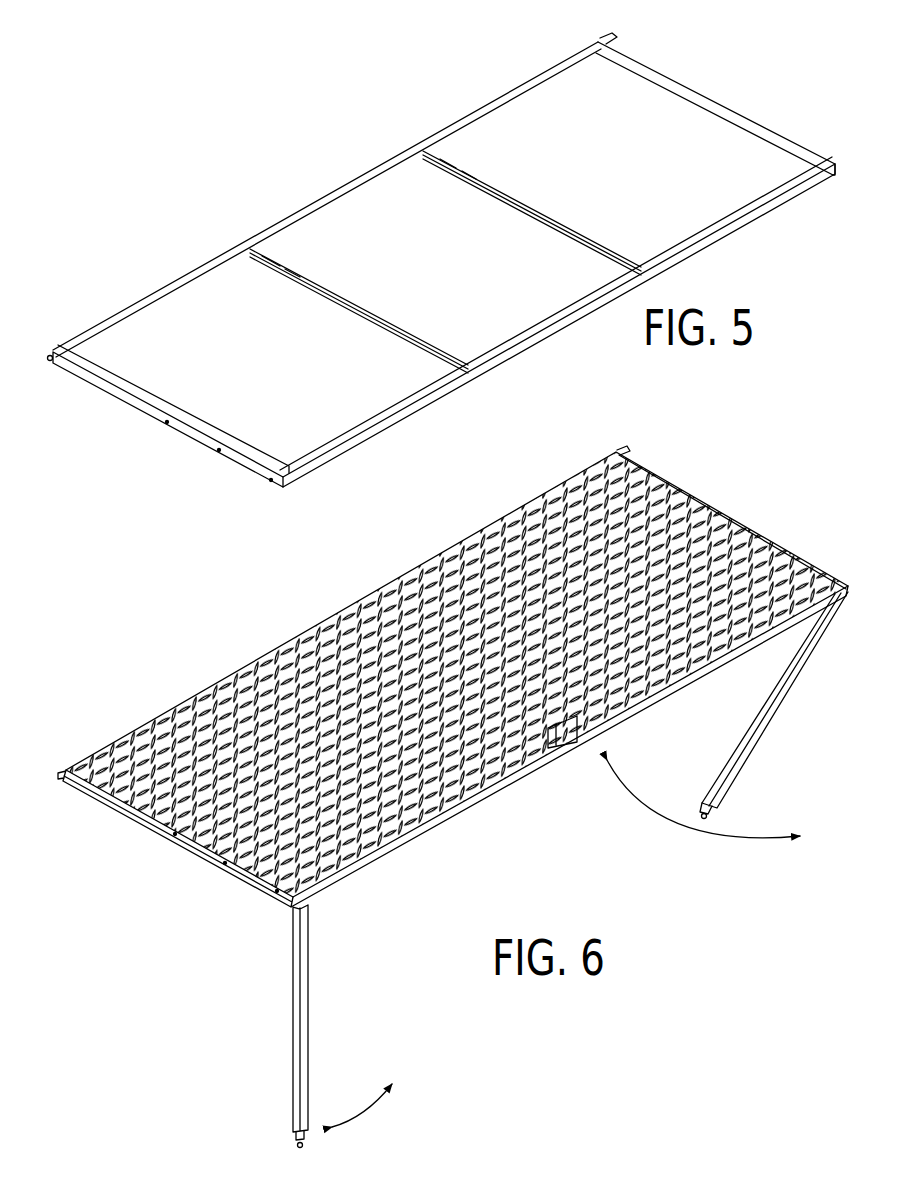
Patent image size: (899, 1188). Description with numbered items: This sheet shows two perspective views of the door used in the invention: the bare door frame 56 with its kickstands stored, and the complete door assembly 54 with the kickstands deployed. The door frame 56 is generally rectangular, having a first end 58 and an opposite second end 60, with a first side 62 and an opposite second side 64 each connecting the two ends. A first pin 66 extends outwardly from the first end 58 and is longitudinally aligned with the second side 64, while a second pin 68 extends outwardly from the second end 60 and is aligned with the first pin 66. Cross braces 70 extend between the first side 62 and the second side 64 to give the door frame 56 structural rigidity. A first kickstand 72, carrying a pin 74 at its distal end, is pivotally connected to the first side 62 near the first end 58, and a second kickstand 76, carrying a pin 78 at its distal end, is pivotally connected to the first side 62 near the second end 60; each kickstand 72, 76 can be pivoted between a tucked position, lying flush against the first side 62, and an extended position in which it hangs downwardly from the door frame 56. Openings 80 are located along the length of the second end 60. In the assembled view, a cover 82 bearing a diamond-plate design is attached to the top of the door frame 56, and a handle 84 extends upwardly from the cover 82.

In FIG. 6, the door assembly 54 is at (146, 866).
In FIG. 5, the door frame 56 is at (188, 260).
In FIG. 5, the first end 58 is at (733, 113).
In FIG. 5, the second end 60 is at (128, 400).
In FIG. 5, the first side 62 is at (556, 330).
In FIG. 5, the second side 64 is at (313, 208).
In FIG. 5, the first pin 66 is at (617, 37).
In FIG. 5, the second pin 68 is at (50, 362).
In FIG. 5, the cross braces 70 is at (540, 212).
In FIG. 6, the first kickstand 72 is at (782, 693).
In FIG. 6, the pin 74 is at (708, 818).
In FIG. 6, the second kickstand 76 is at (303, 960).
In FIG. 6, the pin 78 is at (297, 1147).
In FIG. 5, the openings 80 is at (218, 450).
In FIG. 6, the cover 82 is at (718, 527).
In FIG. 6, the handle 84 is at (553, 748).